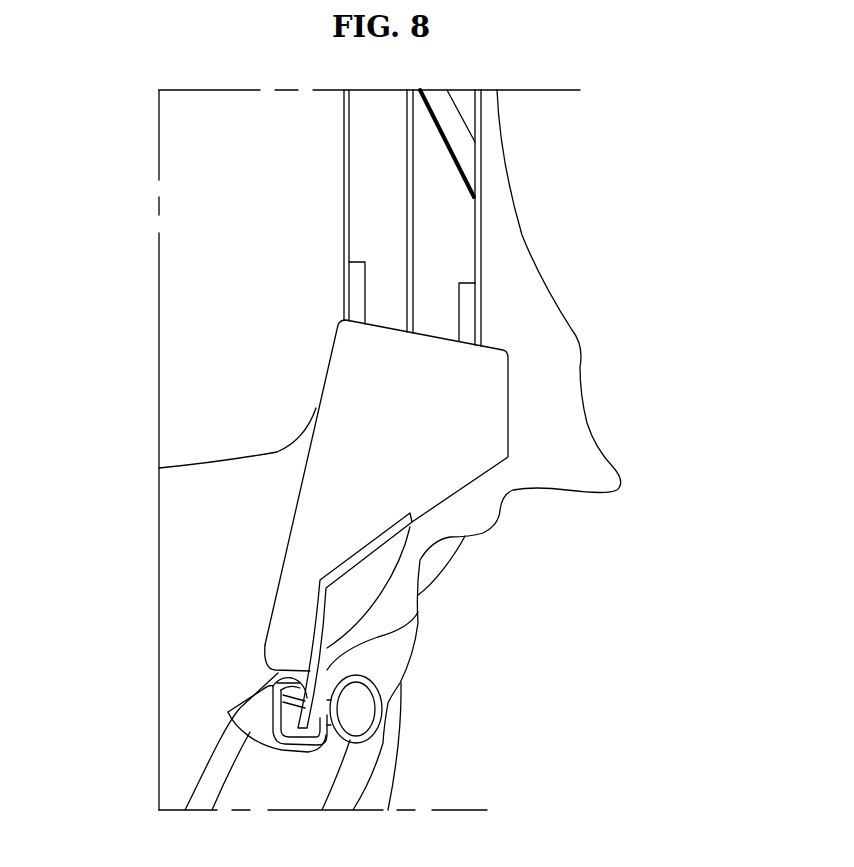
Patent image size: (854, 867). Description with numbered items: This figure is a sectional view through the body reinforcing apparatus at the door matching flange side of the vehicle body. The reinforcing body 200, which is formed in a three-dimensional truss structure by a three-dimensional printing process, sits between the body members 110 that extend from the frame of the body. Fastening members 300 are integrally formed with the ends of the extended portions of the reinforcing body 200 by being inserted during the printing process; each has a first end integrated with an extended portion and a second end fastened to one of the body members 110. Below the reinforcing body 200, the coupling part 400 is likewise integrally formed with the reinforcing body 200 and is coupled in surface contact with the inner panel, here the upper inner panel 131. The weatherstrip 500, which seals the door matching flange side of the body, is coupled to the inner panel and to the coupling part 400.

The body member 110 is at (344, 155).
The fastening member 300 is at (357, 288).
The reinforcing body 200 is at (480, 412).
The upper inner panel 131 is at (362, 582).
The coupling part 400 is at (263, 657).
The weatherstrip 500 is at (377, 728).